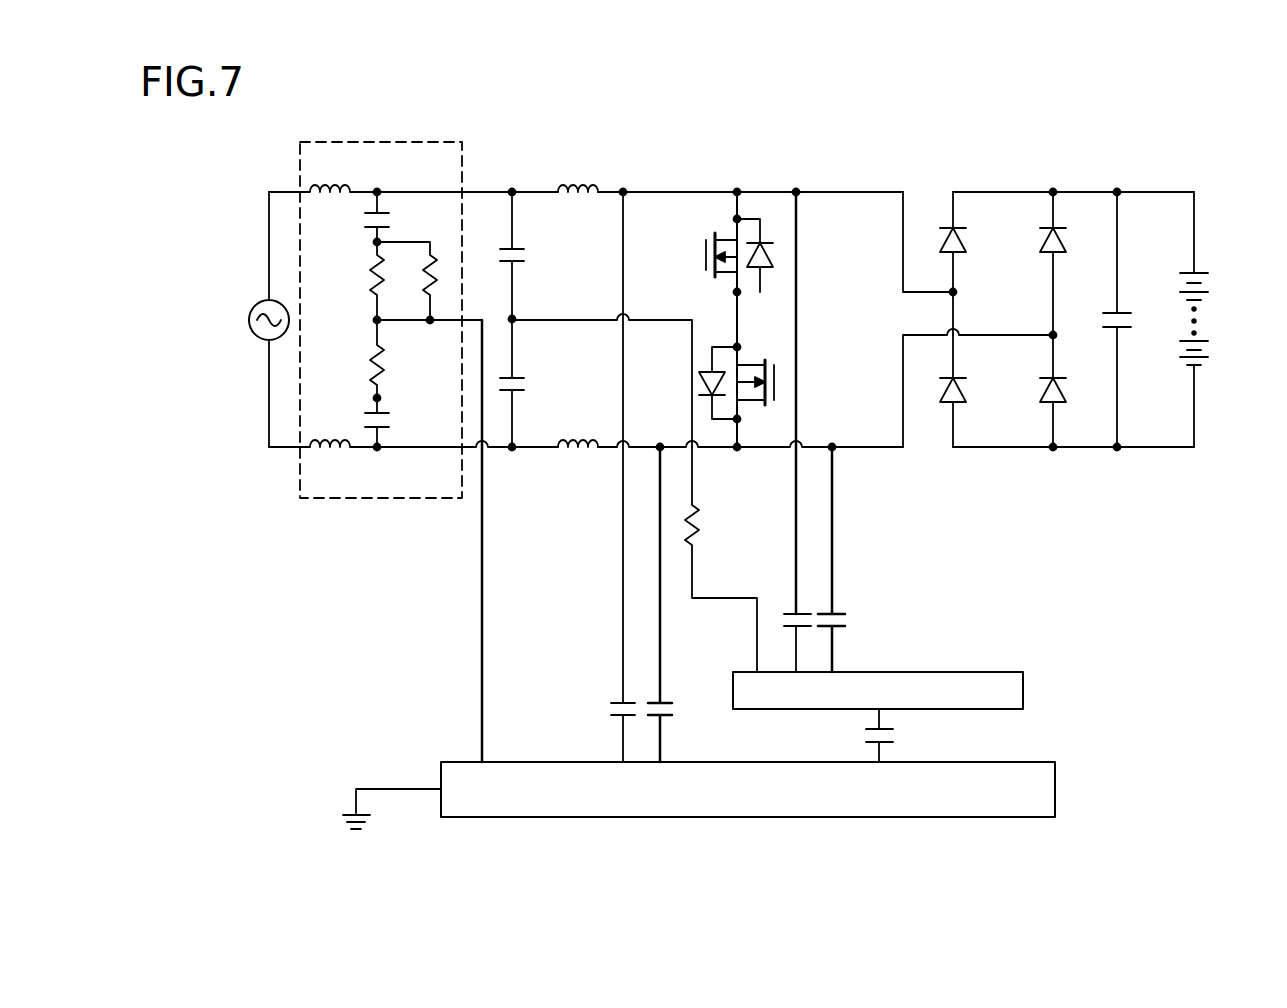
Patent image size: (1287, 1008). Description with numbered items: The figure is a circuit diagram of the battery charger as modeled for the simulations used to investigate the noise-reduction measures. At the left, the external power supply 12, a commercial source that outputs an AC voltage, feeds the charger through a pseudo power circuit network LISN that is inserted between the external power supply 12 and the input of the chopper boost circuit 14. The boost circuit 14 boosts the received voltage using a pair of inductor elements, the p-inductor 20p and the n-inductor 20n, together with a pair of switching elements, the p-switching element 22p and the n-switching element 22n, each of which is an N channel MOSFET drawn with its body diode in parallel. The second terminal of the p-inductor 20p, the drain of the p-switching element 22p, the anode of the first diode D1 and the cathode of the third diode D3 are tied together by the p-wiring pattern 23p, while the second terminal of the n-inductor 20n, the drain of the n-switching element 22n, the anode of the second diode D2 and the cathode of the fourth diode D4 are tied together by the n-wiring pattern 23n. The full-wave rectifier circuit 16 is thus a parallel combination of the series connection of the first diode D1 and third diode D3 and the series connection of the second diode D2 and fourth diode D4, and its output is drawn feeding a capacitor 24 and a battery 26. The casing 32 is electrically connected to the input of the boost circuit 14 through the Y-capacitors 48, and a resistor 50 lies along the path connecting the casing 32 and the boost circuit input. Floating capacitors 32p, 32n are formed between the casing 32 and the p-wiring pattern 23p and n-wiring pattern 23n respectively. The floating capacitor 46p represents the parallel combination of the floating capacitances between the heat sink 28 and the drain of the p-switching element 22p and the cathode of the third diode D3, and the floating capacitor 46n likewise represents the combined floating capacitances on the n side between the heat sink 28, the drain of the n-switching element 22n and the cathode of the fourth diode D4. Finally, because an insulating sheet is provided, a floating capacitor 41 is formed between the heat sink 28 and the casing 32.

The external power supply 12 is at (257, 303).
The chopper boost circuit 14 is at (823, 169).
The full-wave rectifier circuit 16 is at (1067, 285).
The p-inductor 20p is at (578, 200).
The n-inductor 20n is at (578, 455).
The p-switching element 22p is at (706, 252).
The n-switching element 22n is at (776, 372).
The p-wiring pattern 23p is at (858, 193).
The n-wiring pattern 23n is at (868, 447).
The smoothing capacitor 24 is at (1126, 312).
The battery 26 is at (1202, 273).
The heat sink 28 is at (1023, 678).
The casing 32 is at (1055, 778).
The floating capacitor 32p is at (620, 702).
The floating capacitor 32n is at (661, 702).
The floating capacitor 41 is at (870, 730).
The floating capacitor 46p is at (786, 612).
The floating capacitor 46n is at (845, 612).
The Y-capacitors 48 is at (518, 250).
The resistor 50 is at (700, 512).
The first diode D1 is at (966, 244).
The second diode D2 is at (1066, 244).
The third diode D3 is at (960, 380).
The fourth diode D4 is at (1063, 380).
The pseudo power circuit network LISN is at (375, 498).